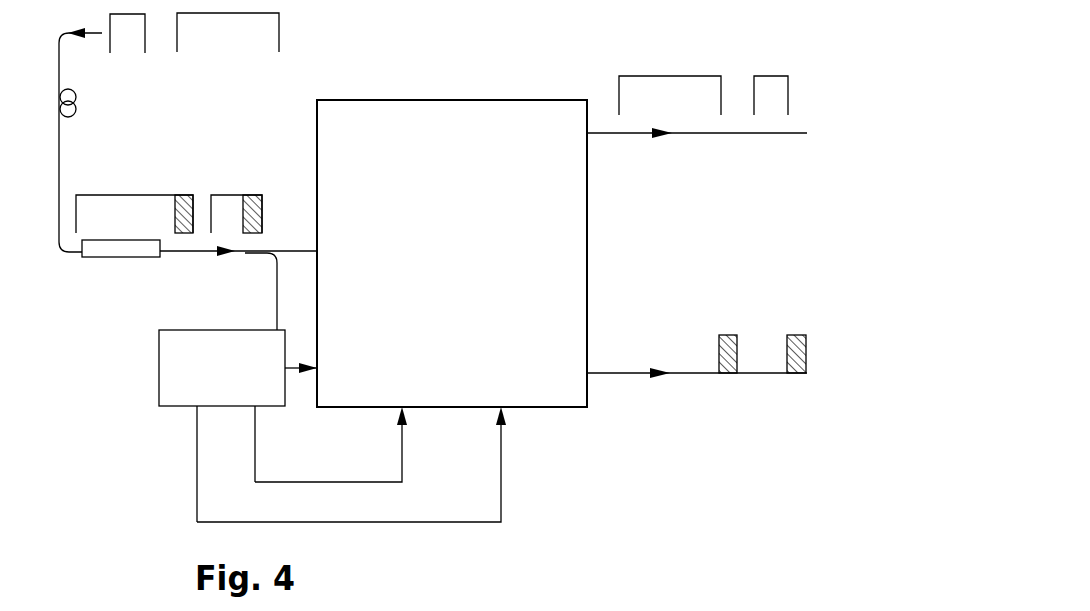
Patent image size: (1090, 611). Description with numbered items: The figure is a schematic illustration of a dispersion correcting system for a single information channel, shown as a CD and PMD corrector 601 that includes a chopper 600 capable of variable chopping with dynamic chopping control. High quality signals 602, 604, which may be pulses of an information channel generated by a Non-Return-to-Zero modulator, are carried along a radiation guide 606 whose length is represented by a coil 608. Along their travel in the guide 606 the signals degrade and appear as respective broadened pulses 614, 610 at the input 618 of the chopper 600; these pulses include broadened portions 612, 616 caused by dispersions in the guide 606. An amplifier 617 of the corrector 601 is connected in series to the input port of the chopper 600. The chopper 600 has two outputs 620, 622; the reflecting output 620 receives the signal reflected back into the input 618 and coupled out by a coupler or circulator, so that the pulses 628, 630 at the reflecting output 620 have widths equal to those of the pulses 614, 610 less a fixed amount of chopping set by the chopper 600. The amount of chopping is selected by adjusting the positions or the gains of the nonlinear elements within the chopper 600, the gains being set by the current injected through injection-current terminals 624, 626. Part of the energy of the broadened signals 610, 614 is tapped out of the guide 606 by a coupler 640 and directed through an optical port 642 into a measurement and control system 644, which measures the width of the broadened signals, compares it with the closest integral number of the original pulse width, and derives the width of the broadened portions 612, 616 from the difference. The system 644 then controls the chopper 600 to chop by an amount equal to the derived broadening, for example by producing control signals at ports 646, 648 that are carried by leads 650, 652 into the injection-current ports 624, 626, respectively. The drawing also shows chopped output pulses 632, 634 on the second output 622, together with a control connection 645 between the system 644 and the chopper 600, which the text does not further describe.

The chopper 600 is at (600, 407).
The CD and PMD corrector 601 is at (418, 74).
The high quality signal 602 is at (122, 14).
The high quality signal 604 is at (253, 14).
The radiation guide 606 is at (61, 76).
The coil 608 is at (74, 113).
The broadened pulse 610 is at (138, 195).
The broadened portion 612 is at (181, 195).
The broadened pulse 614 is at (222, 195).
The broadened portion 616 is at (246, 195).
The amplifier 617 is at (132, 258).
The input 618 is at (185, 254).
The reflecting output 620 is at (685, 136).
The output 622 is at (697, 376).
The injection-current terminal 624 is at (402, 433).
The injection-current terminal 626 is at (501, 442).
The chopped pulse 628 is at (770, 76).
The chopped pulse 630 is at (687, 76).
The first processed sample 632 is at (797, 335).
The second processed sample 634 is at (733, 335).
The coupler 640 is at (263, 256).
The optical port 642 is at (277, 308).
The measurement and control system 644 is at (202, 346).
The control signal line 645 is at (284, 365).
The port 646 is at (197, 433).
The port 648 is at (303, 437).
The lead 650 is at (205, 522).
The lead 652 is at (327, 484).